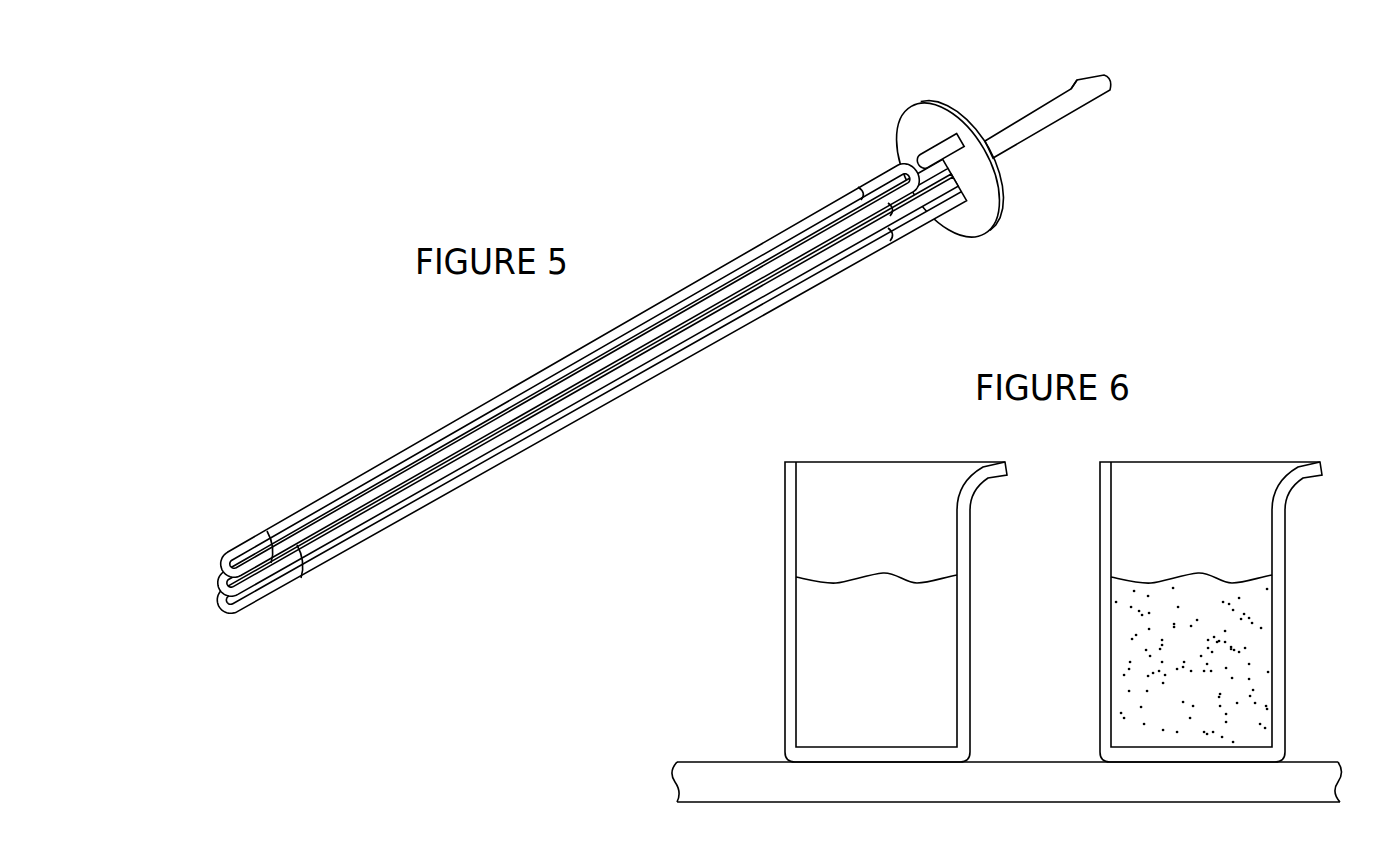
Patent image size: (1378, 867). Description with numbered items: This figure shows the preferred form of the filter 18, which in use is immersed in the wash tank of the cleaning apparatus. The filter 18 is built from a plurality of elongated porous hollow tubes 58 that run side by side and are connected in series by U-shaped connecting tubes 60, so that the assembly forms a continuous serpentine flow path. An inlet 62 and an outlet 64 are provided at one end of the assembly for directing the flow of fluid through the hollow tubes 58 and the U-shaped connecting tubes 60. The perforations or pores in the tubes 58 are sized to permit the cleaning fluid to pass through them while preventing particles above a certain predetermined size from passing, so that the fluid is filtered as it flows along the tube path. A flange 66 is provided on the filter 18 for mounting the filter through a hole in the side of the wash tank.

The filter 18 is at (691, 360).
The elongated porous hollow tubes 58 is at (415, 446).
The U-shaped connecting tubes 60 is at (232, 545).
The inlet 62 is at (1108, 82).
The outlet 64 is at (1073, 86).
The flange 66 is at (961, 222).